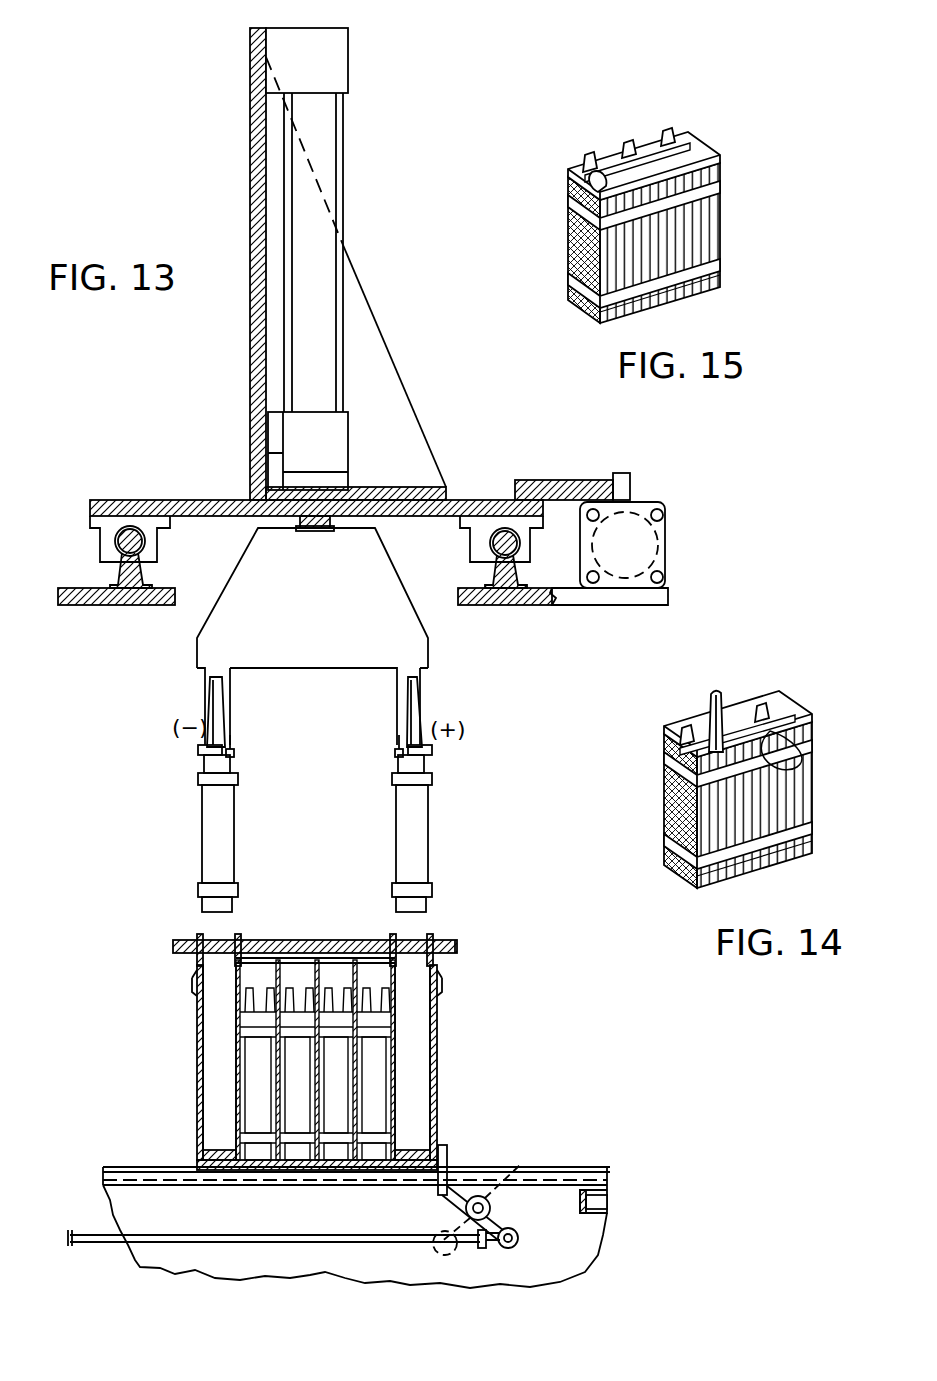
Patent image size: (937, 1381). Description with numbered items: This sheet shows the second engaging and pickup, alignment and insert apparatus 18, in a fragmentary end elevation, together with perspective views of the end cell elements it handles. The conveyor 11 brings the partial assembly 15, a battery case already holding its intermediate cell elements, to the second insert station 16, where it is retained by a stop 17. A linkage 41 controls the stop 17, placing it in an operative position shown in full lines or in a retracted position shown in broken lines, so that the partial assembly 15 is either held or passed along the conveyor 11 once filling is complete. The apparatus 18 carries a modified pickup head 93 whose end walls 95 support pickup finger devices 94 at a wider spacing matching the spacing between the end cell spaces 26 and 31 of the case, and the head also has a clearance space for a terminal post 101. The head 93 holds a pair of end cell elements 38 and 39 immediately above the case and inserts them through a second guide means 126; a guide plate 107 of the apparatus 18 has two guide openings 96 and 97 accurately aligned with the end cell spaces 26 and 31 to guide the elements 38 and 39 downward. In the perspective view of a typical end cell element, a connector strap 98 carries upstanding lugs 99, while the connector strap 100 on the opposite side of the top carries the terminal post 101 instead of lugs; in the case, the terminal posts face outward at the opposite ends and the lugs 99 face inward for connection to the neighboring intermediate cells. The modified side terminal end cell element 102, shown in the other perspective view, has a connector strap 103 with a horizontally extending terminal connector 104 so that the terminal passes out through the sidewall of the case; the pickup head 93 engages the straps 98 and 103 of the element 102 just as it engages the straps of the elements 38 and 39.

In FIG. 13, the second engaging and pickup, alignment and insert apparatus 18 is at (378, 288).
In FIG. 13, the end walls of the pickup head frame 95 is at (372, 565).
In FIG. 13, the pickup head 93 is at (415, 655).
In FIG. 13, the terminal post 101 is at (213, 700).
In FIG. 14, the terminal post 101 is at (722, 720).
In FIG. 13, the pickup finger devices 94 is at (225, 760).
In FIG. 13, the end cell element 39 is at (220, 818).
In FIG. 14, the end cell element 39 is at (672, 812).
In FIG. 13, the end cell element 38 is at (415, 818).
In FIG. 14, the end cell element 38 is at (770, 706).
In FIG. 13, the guide plate 107 is at (313, 940).
In FIG. 13, the guide opening 96 is at (240, 936).
In FIG. 13, the guide opening 97 is at (433, 936).
In FIG. 13, the second guide means 126 is at (460, 945).
In FIG. 13, the partial assembly 15 is at (437, 1040).
In FIG. 13, the end cell space 31 is at (229, 1033).
In FIG. 13, the end cell space 26 is at (422, 1076).
In FIG. 13, the conveyor 11 is at (568, 1167).
In FIG. 13, the second insert station 16 is at (326, 1284).
In FIG. 13, the stop 17 is at (447, 1152).
In FIG. 13, the linkage 41 is at (243, 1228).
In FIG. 15, the side terminal end cell element 102 is at (722, 233).
In FIG. 15, the connector strap 103 is at (706, 160).
In FIG. 15, the connector strap 98 is at (648, 148).
In FIG. 14, the connector strap 98 is at (705, 735).
In FIG. 15, the lugs 99 is at (585, 162).
In FIG. 14, the lugs 99 is at (683, 732).
In FIG. 15, the terminal connector 104 is at (592, 183).
In FIG. 14, the connector strap 100 is at (800, 769).